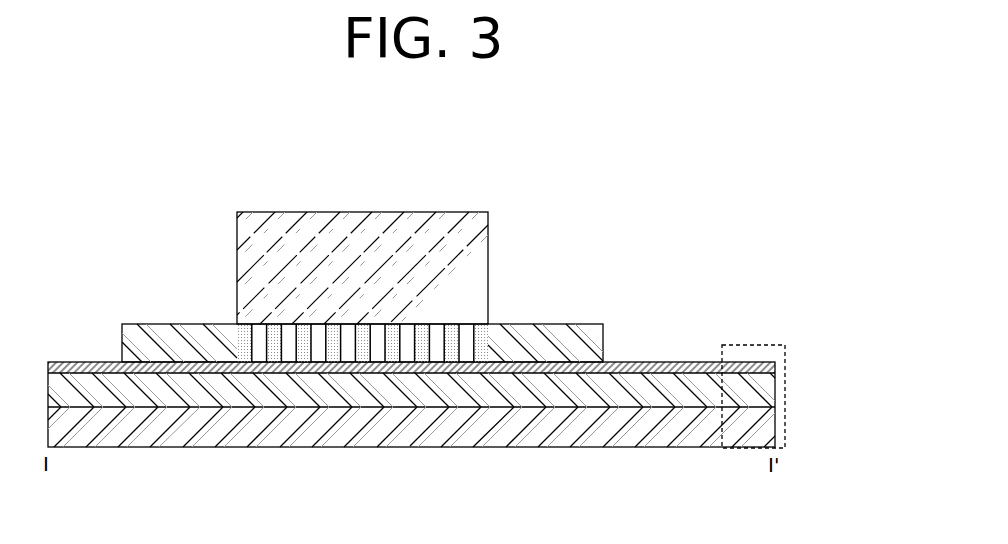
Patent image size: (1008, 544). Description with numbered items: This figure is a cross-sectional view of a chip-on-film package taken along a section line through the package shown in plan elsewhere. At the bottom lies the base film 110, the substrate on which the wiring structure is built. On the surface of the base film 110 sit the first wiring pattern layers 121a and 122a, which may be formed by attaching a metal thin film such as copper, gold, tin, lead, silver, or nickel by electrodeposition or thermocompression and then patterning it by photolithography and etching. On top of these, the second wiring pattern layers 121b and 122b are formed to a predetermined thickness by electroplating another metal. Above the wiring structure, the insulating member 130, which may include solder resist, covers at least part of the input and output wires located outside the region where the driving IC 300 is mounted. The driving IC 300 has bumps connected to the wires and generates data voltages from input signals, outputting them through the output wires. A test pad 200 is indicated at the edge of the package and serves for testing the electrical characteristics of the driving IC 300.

The base film 110 is at (781, 423).
The first wiring pattern layer 121a is at (88, 388).
The second wiring pattern layer 121b is at (62, 375).
The first wiring pattern layer 122a is at (678, 405).
The second wiring pattern layer 122b is at (715, 405).
The insulating member 130 is at (537, 343).
The test pad 200 is at (757, 345).
The driving IC 300 is at (378, 212).